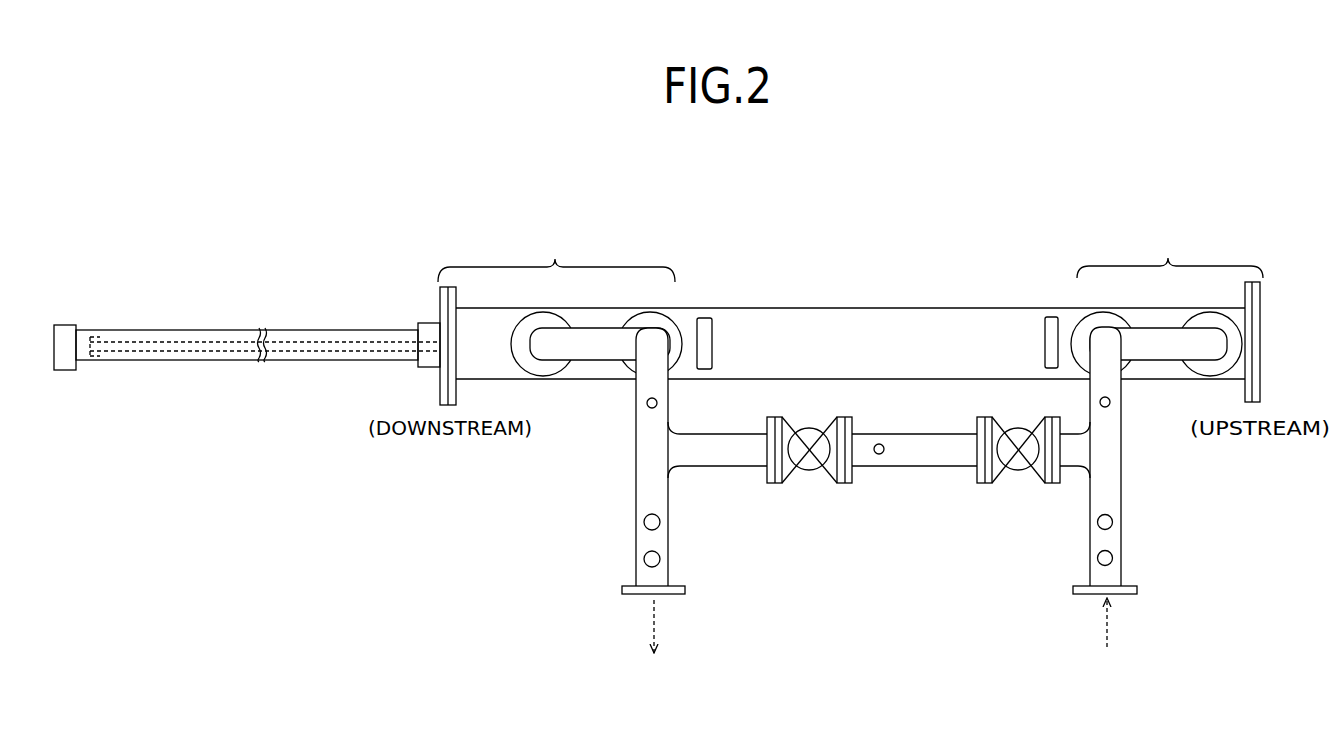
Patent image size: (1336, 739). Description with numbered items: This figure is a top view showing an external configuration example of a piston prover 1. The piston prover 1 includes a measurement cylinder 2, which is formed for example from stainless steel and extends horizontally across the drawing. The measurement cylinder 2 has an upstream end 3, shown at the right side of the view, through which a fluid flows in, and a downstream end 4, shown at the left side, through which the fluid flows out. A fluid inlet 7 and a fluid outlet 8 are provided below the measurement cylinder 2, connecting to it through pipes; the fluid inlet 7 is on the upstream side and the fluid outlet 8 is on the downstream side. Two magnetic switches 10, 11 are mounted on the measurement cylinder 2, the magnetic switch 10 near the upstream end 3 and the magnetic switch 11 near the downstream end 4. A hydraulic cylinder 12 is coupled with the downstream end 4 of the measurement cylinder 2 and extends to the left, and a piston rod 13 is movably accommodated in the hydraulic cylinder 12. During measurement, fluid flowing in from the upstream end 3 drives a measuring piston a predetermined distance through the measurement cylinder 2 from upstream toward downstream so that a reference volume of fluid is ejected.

The piston prover 1 is at (862, 250).
The measurement cylinder 2 is at (816, 306).
The upstream end 3 is at (1168, 258).
The downstream end 4 is at (555, 259).
The fluid inlet 7 is at (1108, 596).
The fluid outlet 8 is at (646, 597).
The magnetic switch 10 is at (1052, 315).
The magnetic switch 11 is at (703, 316).
The hydraulic cylinder 12 is at (310, 328).
The piston rod 13 is at (188, 361).